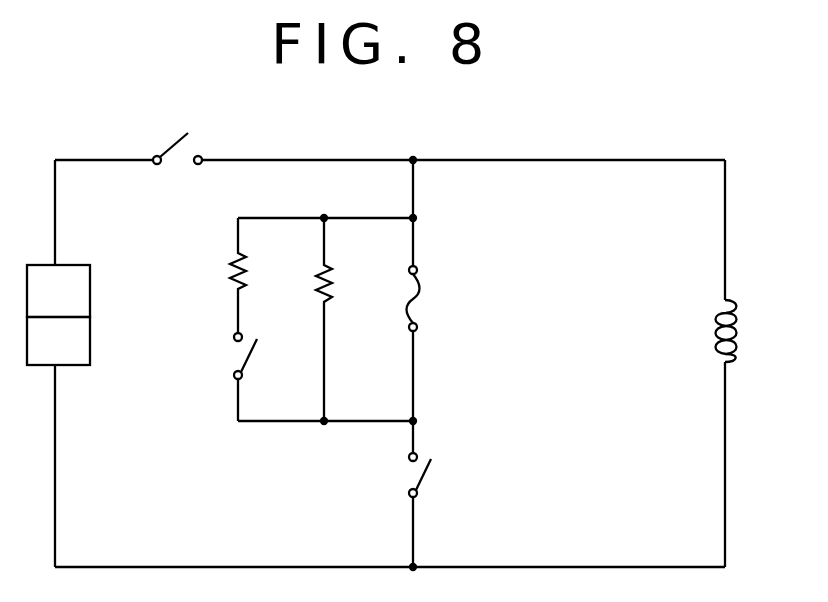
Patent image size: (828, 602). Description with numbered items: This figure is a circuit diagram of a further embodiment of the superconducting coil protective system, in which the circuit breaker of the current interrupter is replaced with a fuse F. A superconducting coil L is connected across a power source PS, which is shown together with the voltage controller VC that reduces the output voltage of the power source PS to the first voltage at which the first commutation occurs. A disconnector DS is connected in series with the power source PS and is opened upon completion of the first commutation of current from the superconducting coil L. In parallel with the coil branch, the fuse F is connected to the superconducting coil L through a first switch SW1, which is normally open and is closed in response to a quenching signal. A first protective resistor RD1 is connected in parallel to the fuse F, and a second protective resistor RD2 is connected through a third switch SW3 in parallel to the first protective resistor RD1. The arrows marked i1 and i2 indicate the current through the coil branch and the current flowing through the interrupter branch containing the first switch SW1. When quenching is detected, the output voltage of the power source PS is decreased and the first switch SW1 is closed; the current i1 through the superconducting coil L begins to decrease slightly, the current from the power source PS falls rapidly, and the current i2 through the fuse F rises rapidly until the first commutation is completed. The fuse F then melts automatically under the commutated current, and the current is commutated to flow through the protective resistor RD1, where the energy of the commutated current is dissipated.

The disconnector DS is at (177, 133).
The power source PS is at (58, 291).
The voltage controller VC is at (58, 341).
The first protective resistor RD1 is at (350, 319).
The second protective resistor RD2 is at (207, 275).
The third switch SW3 is at (208, 377).
The fuse F is at (427, 319).
The first switch SW1 is at (454, 494).
The superconducting coil L is at (741, 331).
The coil current i1 is at (715, 128).
The discharge current i2 is at (461, 510).